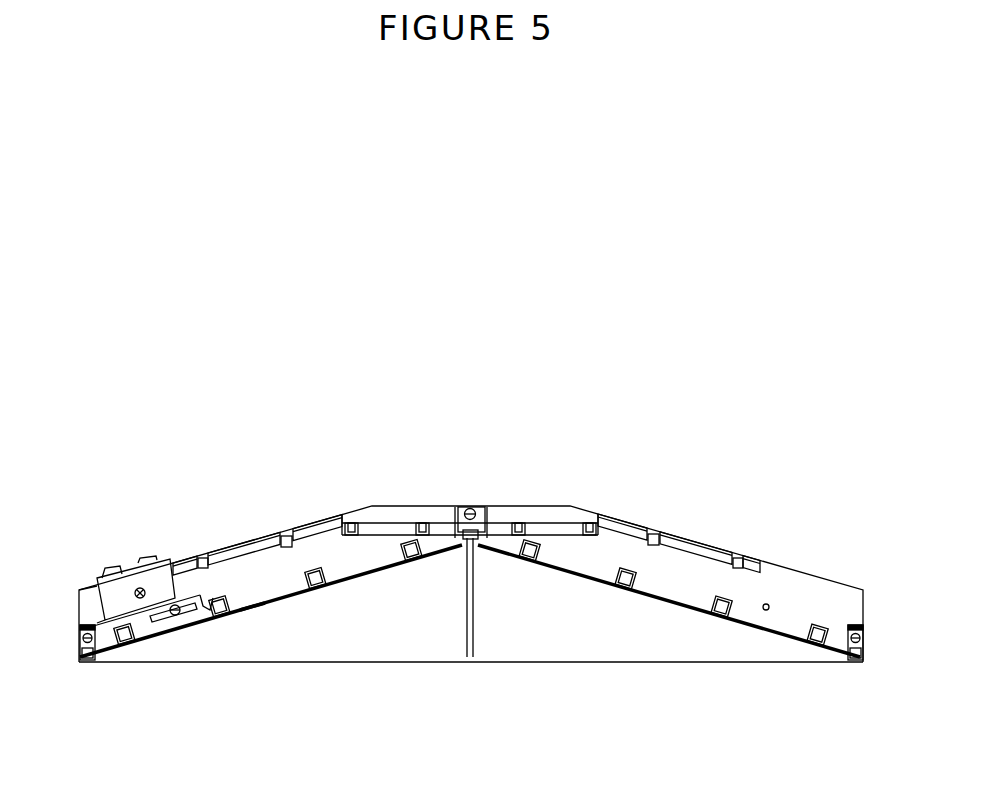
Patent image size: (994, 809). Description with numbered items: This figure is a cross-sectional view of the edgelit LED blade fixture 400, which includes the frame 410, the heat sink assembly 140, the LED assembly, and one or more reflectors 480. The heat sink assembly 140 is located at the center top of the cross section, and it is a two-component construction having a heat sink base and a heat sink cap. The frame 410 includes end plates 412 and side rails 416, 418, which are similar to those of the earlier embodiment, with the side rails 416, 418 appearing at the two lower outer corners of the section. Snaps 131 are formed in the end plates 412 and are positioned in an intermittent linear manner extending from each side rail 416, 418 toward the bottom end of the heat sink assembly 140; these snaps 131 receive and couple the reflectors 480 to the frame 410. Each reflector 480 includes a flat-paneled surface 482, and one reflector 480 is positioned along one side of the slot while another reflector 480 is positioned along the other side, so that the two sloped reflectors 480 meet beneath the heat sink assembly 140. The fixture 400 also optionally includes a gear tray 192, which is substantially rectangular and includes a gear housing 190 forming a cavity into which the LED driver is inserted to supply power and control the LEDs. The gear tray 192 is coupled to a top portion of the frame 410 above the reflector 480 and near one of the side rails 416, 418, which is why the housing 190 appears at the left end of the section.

The edgelit LED blade fixture 400 is at (531, 393).
The frame 410 is at (724, 532).
The end plate 412 is at (298, 647).
The side rail 416 is at (86, 664).
The side rail 418 is at (867, 638).
The reflector 480 is at (305, 597).
The flat-paneled surface 482 is at (252, 604).
The snap 131 is at (410, 545).
The heat sink assembly 140 is at (483, 492).
The gear housing 190 is at (160, 580).
The gear tray 192 is at (202, 620).